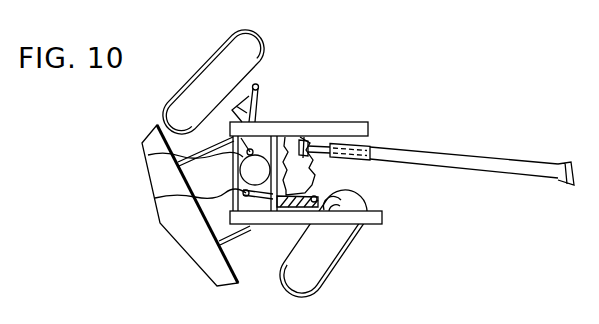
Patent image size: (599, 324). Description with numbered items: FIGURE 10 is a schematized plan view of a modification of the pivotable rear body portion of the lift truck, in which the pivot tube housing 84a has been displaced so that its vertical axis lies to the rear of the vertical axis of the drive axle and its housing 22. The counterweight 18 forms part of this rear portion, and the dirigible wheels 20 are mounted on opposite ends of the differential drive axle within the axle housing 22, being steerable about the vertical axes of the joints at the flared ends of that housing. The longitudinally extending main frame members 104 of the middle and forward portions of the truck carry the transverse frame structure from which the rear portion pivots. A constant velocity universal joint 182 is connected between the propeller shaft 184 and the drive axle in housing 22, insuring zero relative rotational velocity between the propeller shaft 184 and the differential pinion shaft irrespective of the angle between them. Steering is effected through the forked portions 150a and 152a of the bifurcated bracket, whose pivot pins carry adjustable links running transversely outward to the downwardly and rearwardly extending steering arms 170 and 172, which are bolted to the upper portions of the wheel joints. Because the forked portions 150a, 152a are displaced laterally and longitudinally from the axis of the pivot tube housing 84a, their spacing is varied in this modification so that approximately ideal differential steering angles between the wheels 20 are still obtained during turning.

The counterweight 18 is at (182, 233).
The dirigible wheels 20 is at (332, 258).
The differential drive axle housing 22 is at (297, 170).
The pivot tube housing 84a is at (259, 168).
The longitudinally extending main frame members 104 is at (357, 128).
The forked portion 150a is at (148, 155).
The forked portion 152a is at (155, 198).
The steering arm 170 is at (330, 197).
The steering arm 172 is at (258, 89).
The constant velocity universal joint 182 is at (310, 142).
The propeller shaft 184 is at (417, 155).